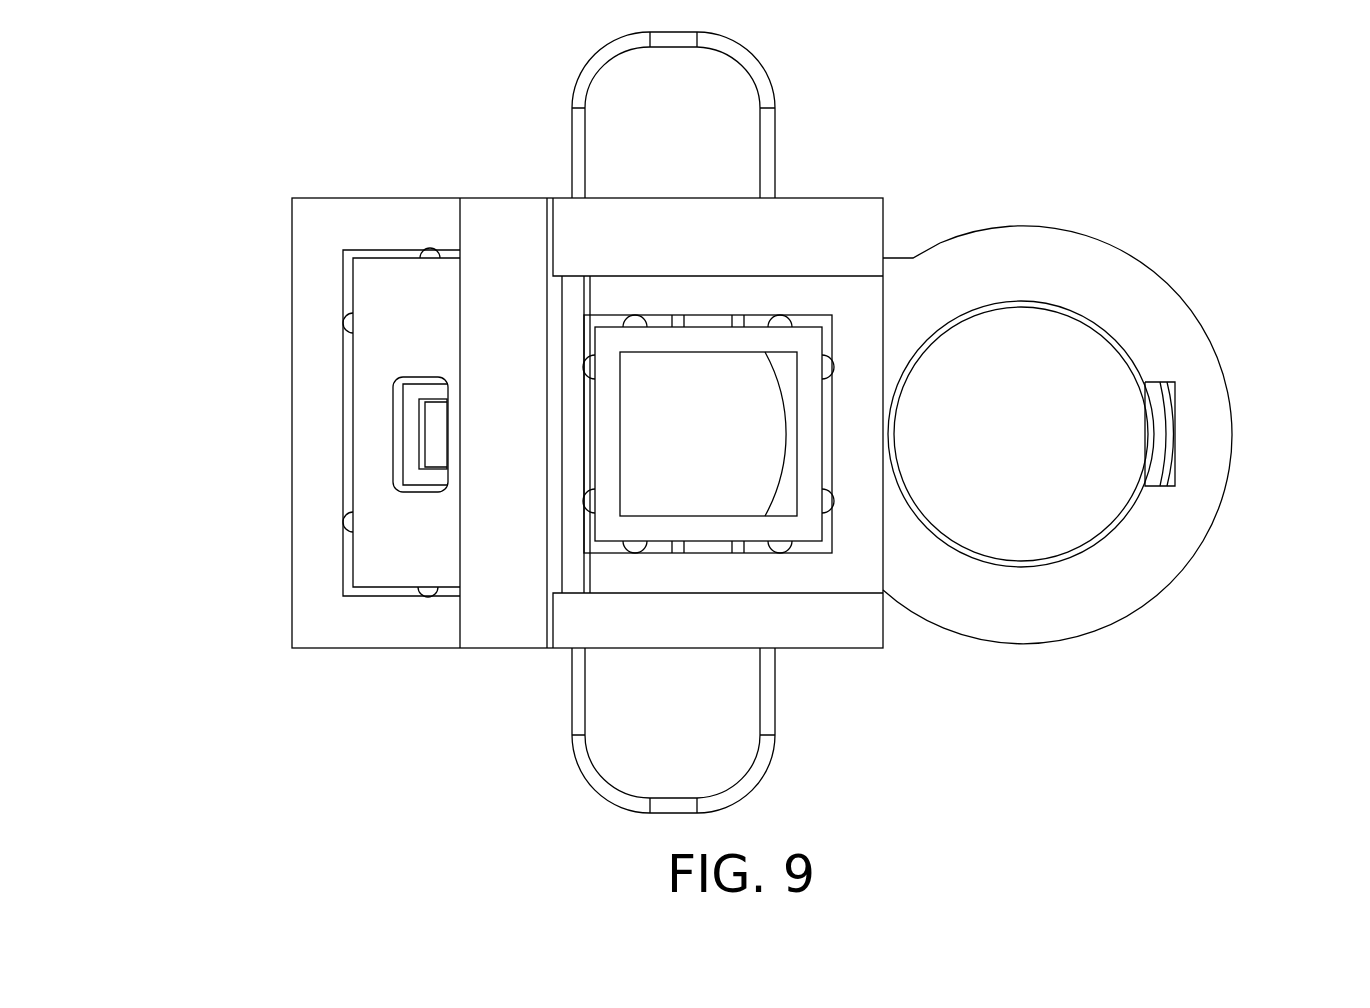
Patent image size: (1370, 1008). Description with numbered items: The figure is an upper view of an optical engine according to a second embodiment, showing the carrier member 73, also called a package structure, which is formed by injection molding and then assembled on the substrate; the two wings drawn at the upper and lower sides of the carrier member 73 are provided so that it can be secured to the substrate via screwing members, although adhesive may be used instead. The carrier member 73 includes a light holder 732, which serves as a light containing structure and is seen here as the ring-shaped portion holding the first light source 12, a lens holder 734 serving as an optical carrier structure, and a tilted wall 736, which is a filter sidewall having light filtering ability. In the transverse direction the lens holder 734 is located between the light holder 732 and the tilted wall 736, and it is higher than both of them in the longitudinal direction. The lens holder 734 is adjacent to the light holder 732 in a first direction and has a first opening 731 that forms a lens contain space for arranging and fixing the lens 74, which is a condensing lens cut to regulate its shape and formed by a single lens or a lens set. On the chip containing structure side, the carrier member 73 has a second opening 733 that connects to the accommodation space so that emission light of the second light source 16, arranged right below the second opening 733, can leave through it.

The carrier member 73 is at (292, 592).
The first opening 731 is at (602, 320).
The light holder 732 is at (1200, 377).
The second opening 733 is at (398, 407).
The lens holder 734 is at (775, 300).
The tilted wall 736 is at (503, 325).
The first light source 12 is at (1087, 378).
The second light source 16 is at (435, 423).
The lens 74 is at (741, 465).